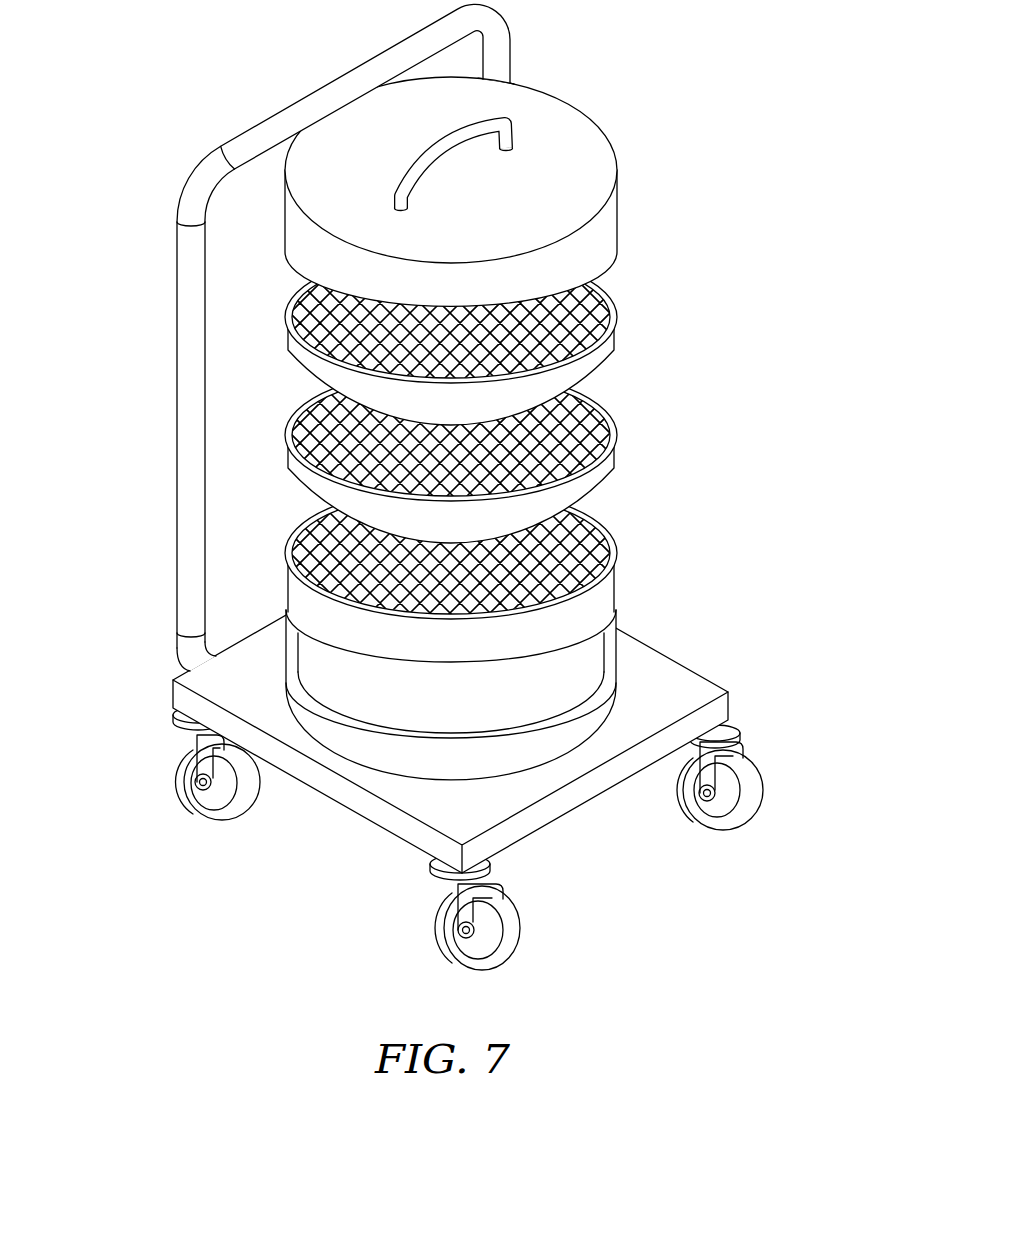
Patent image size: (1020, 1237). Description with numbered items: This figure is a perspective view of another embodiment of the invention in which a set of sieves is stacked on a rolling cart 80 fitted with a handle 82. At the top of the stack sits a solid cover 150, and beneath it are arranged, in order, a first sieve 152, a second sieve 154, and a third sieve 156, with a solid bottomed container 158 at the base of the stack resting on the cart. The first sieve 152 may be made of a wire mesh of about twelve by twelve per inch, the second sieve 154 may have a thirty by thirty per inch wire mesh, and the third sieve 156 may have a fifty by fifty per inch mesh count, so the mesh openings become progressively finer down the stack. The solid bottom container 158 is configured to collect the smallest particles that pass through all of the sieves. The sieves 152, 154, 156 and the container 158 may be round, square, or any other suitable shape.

The rolling cart 80 is at (680, 694).
The handle 82 is at (183, 512).
The solid cover 150 is at (517, 213).
The first sieve 152 is at (608, 343).
The second sieve 154 is at (608, 455).
The third sieve 156 is at (605, 577).
The solid bottomed container 158 is at (570, 672).